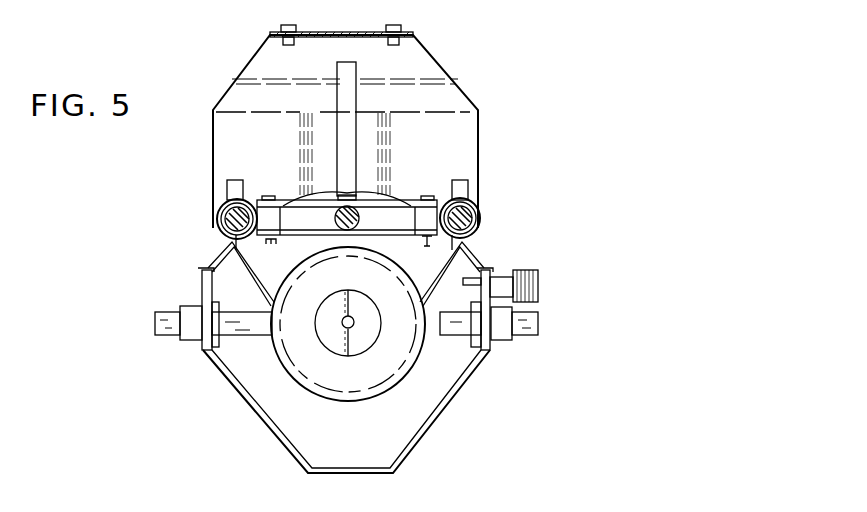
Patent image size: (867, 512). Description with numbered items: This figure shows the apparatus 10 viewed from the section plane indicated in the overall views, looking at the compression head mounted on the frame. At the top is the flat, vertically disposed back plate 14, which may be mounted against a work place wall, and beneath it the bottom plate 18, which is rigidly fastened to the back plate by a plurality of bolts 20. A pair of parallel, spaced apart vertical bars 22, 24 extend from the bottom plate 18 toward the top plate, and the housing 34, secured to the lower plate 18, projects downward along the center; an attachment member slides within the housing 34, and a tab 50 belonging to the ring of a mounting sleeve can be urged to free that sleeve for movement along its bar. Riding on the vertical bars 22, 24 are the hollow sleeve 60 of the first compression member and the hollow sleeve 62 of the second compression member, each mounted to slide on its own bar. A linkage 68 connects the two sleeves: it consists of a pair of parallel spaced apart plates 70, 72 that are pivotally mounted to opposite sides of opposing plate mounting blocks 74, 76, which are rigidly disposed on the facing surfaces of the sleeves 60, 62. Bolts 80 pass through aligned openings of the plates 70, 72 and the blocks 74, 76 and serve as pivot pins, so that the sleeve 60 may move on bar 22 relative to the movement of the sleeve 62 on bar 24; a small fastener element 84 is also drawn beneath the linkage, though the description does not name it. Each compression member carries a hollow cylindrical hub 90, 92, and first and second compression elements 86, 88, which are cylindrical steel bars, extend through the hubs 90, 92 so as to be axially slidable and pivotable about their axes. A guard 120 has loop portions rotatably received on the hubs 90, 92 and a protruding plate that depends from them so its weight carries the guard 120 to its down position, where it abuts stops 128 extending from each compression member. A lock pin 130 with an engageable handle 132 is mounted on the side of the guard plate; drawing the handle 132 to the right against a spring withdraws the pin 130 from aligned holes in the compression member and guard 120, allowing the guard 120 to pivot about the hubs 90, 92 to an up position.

The apparatus 10 is at (498, 126).
The back plate 14 is at (322, 33).
The bottom plate 18 is at (213, 128).
The bolts 20 is at (289, 46).
The vertical bar 22 is at (221, 219).
The vertical bar 24 is at (477, 218).
The housing 34 is at (336, 110).
The tab 50 is at (228, 184).
The hollow sleeve 60 is at (222, 232).
The hollow sleeve 62 is at (478, 232).
The linkage 68 is at (306, 197).
The plate 70 is at (410, 200).
The plate 72 is at (322, 236).
The plate mounting block 74 is at (282, 218).
The plate mounting block 76 is at (414, 218).
The bolts 80 is at (344, 252).
The right clip 84 is at (385, 236).
The first compression element 86 is at (155, 327).
The second compression element 88 is at (538, 333).
The hollow cylindrical hub 90 is at (190, 341).
The hollow cylindrical hub 92 is at (503, 341).
The guard 120 is at (445, 413).
The stops 128 is at (205, 268).
The lock pin 130 is at (505, 292).
The handle 132 is at (538, 286).